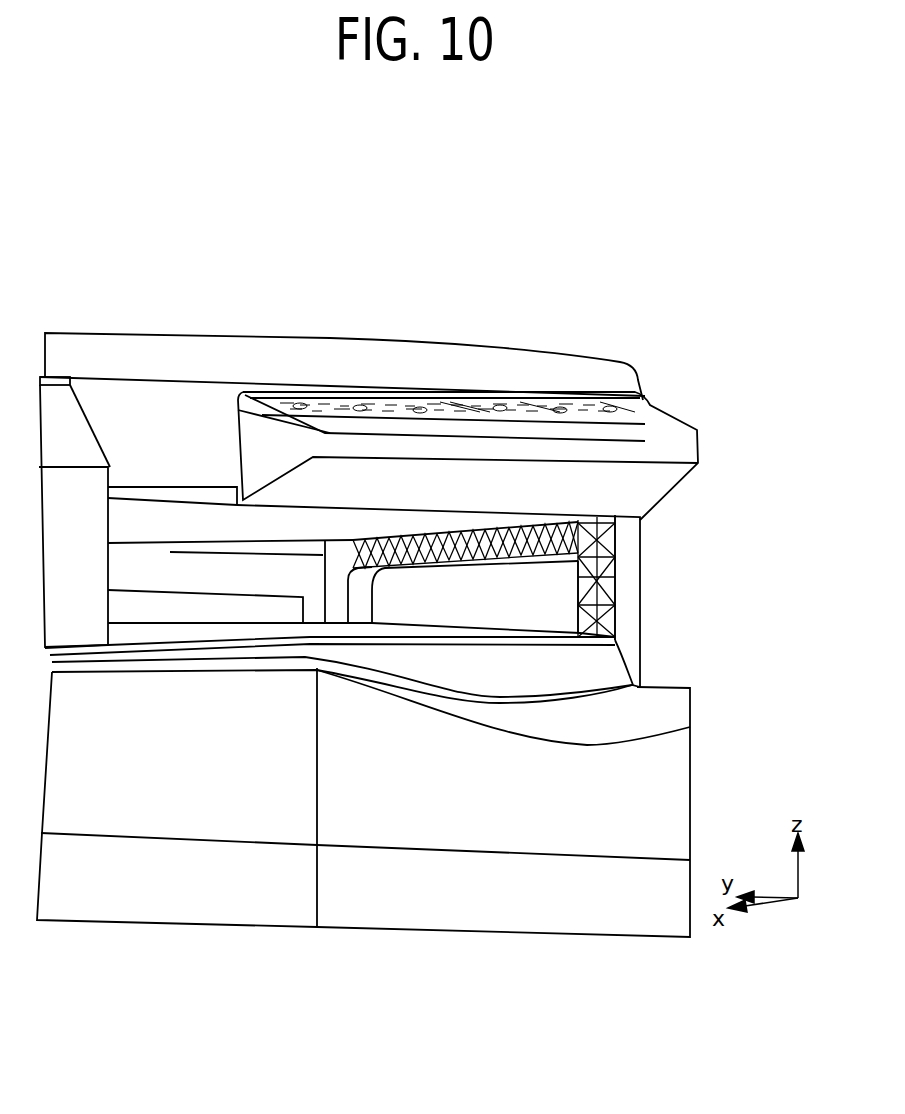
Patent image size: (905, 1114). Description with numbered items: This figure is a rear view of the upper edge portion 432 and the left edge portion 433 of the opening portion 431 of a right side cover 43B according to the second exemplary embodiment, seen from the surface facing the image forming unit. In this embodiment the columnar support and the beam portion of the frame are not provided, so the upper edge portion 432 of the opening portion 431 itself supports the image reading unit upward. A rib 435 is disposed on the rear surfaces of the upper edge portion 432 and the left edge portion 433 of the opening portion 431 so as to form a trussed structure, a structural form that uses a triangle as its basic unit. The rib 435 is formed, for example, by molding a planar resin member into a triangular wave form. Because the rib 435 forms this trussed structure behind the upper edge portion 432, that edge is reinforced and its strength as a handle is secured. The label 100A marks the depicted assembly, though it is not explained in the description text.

The liquid ejecting head unit 100A is at (686, 402).
The right side cover 43B is at (658, 553).
The opening portion 431 is at (395, 585).
The upper edge portion 432 is at (463, 540).
The left edge portion 433 is at (610, 605).
The rib 435 is at (520, 533).